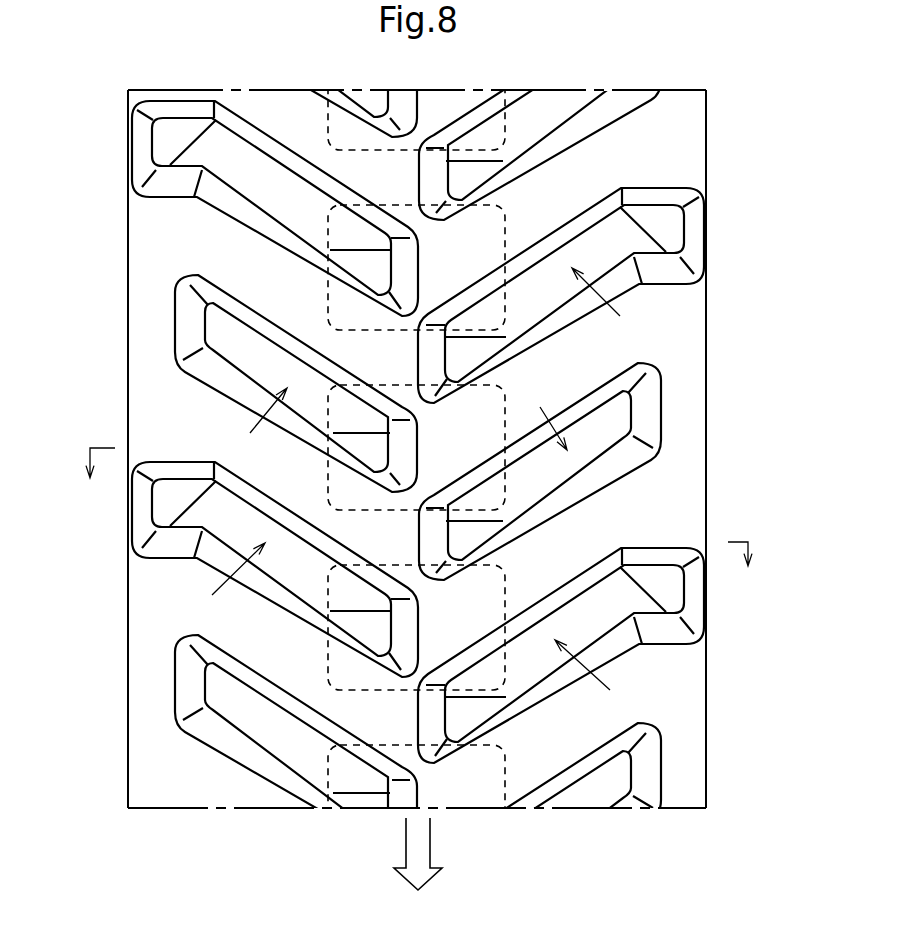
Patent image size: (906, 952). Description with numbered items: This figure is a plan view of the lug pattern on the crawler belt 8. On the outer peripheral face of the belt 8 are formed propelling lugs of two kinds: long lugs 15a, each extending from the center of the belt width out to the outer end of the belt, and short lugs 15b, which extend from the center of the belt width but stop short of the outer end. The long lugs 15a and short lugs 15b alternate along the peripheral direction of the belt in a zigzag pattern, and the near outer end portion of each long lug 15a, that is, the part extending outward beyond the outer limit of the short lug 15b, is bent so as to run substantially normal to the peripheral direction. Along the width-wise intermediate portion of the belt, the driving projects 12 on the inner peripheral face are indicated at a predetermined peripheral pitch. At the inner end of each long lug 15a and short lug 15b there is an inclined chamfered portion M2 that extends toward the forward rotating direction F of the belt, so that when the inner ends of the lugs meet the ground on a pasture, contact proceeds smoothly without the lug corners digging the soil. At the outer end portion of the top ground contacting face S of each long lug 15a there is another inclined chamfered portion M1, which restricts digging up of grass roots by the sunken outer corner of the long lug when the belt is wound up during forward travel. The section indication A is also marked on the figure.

The crawler belt 8 is at (128, 240).
The driving projects 12 is at (500, 208).
The long lug 15a is at (135, 148).
The short lug 15b is at (180, 326).
The inclined chamfered portion M1 is at (176, 485).
The inclined chamfered portion M2 is at (373, 458).
The top ground contacting face S is at (419, 489).
The section line A is at (419, 490).
The forward rotating direction F is at (429, 854).